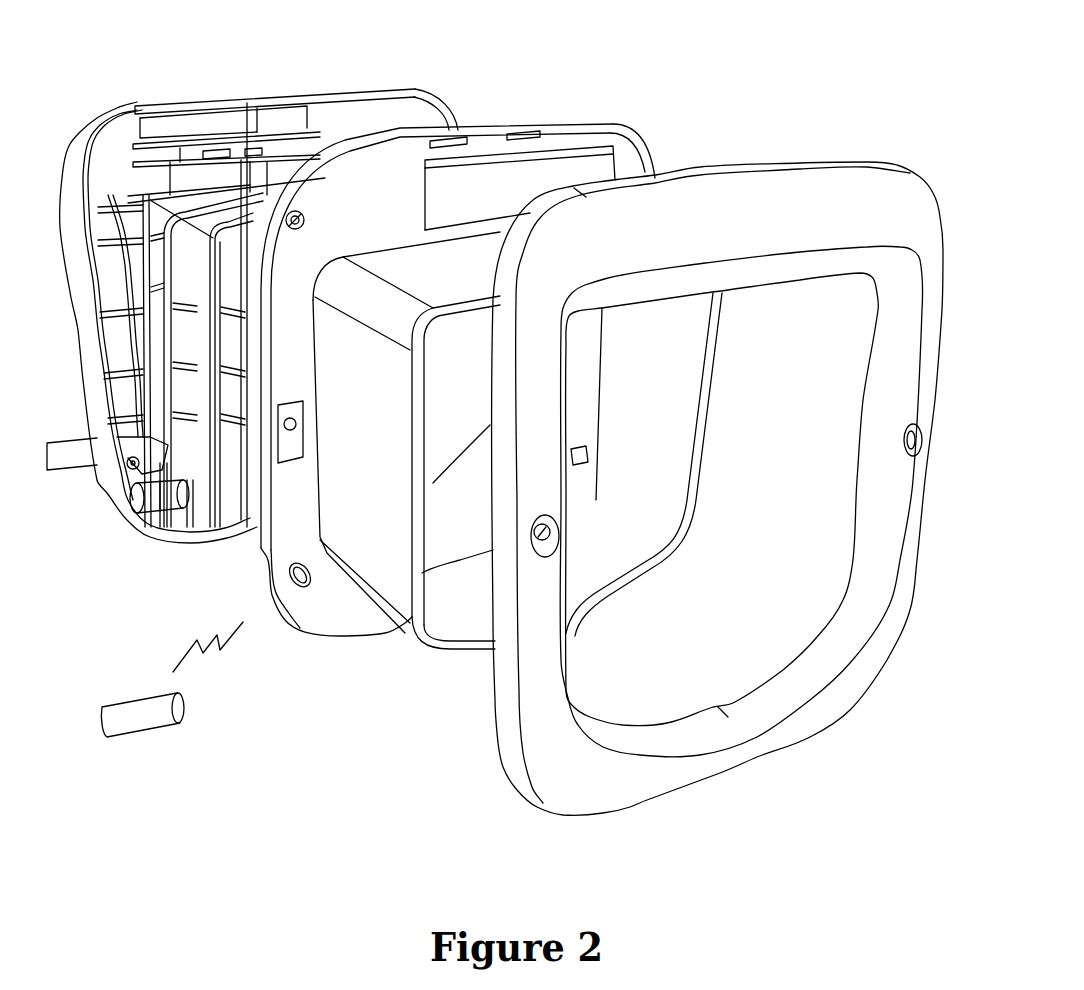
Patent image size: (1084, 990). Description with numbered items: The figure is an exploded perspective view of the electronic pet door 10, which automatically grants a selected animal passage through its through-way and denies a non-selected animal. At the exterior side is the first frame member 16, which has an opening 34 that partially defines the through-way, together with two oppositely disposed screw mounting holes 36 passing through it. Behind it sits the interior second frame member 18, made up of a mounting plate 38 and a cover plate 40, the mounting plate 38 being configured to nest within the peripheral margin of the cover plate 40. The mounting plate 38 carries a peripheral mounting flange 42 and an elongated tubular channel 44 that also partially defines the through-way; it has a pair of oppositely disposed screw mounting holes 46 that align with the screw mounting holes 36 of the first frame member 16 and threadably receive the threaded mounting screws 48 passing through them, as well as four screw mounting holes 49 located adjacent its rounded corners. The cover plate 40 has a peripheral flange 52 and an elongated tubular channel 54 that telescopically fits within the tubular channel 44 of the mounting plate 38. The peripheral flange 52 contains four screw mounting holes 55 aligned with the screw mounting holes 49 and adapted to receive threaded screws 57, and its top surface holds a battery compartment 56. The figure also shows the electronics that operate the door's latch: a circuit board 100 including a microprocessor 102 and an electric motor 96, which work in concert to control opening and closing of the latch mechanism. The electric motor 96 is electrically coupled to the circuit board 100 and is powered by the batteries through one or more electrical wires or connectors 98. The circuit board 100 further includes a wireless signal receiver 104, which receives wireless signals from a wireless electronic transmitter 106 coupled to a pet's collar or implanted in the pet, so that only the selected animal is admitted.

The electronic pet door 10 is at (852, 91).
The first frame member 16 is at (897, 200).
The second frame member 18 is at (652, 75).
The opening 34 is at (808, 673).
The screw mounting holes 36 is at (905, 438).
The mounting plate 38 is at (628, 157).
The cover plate 40 is at (423, 92).
The peripheral mounting flange 42 is at (550, 137).
The tubular channel 44 is at (470, 253).
The screw mounting holes 46 is at (295, 426).
The threaded mounting screws 48 is at (551, 533).
The screw mounting holes 49 is at (306, 216).
The peripheral flange 52 is at (107, 140).
The tubular channel 54 is at (177, 283).
The screw mounting holes 55 is at (97, 143).
The battery compartment 56 is at (362, 95).
The threaded screws 57 is at (305, 226).
The electric motor 96 is at (143, 510).
The electrical wires or connectors 98 is at (103, 383).
The circuit board 100 is at (257, 143).
The microprocessor 102 is at (190, 147).
The wireless signal receiver 104 is at (310, 147).
The wireless electronic transmitter 106 is at (150, 722).